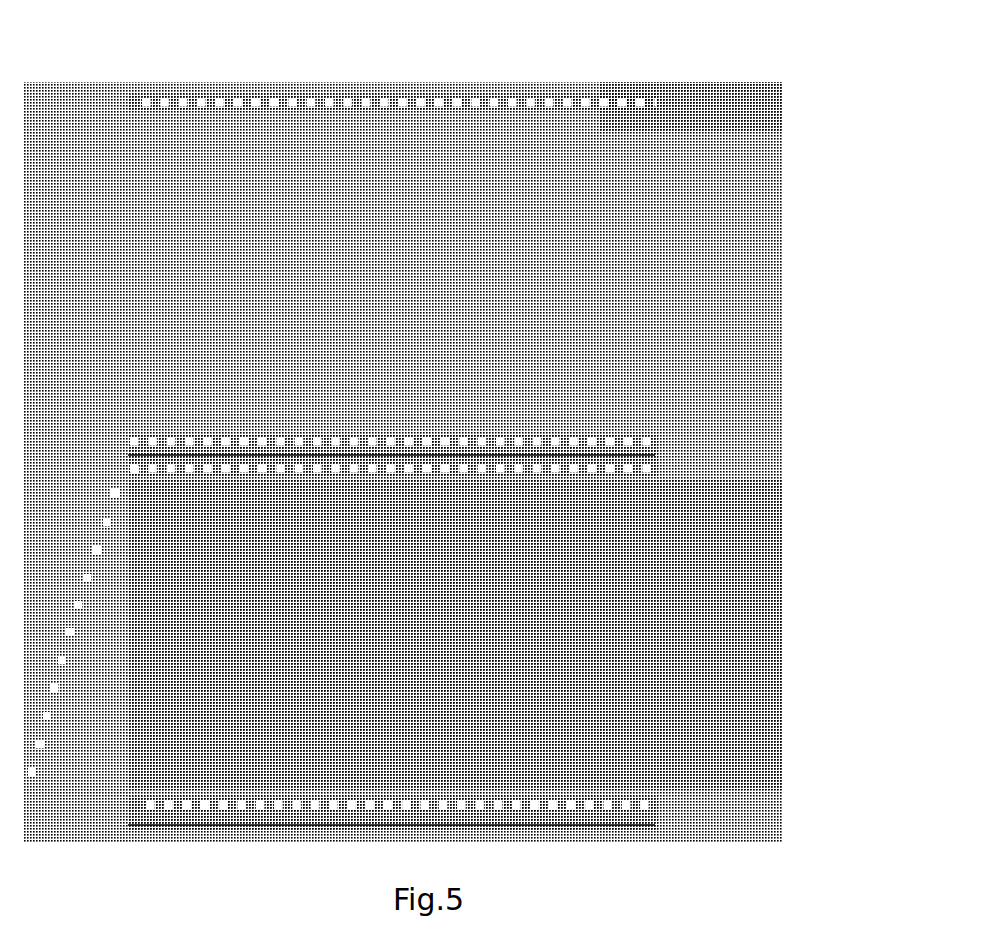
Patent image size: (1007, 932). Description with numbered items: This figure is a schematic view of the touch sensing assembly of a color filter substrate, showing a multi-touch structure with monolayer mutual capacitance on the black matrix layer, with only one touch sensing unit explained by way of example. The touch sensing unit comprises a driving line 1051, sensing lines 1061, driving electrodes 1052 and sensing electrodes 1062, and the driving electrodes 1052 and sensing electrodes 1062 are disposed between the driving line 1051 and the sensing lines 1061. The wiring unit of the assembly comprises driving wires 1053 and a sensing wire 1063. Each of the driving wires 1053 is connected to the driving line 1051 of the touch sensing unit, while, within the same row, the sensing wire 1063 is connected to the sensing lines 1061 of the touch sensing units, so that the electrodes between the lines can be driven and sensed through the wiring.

The driving line 1051 is at (643, 460).
The driving electrodes 1052 is at (637, 371).
The driving wires 1053 is at (99, 82).
The sensing lines 1061 is at (425, 82).
The sensing electrodes 1062 is at (645, 118).
The sensing wire 1063 is at (662, 578).